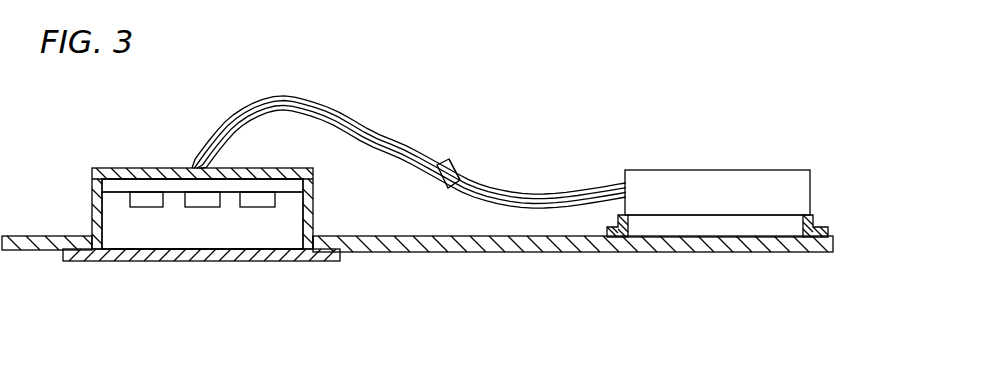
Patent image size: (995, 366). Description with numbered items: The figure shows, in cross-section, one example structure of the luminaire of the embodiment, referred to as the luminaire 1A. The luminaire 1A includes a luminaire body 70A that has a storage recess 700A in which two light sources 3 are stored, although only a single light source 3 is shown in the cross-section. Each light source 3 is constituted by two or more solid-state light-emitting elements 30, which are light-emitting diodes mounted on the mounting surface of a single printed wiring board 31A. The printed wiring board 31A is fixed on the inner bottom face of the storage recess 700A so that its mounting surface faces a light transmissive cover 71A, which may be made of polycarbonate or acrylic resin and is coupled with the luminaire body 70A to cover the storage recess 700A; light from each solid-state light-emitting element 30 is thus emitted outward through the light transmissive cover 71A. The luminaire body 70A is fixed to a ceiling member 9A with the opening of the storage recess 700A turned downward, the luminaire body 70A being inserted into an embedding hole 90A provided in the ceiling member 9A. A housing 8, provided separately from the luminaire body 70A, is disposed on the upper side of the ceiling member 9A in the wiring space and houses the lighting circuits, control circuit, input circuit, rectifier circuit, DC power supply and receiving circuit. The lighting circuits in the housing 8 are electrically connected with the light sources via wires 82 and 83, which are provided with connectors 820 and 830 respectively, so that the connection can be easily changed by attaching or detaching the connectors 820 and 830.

The luminaire 1A is at (203, 232).
The light source 3 is at (197, 270).
The solid-state light-emitting element 30 is at (145, 207).
The printed wiring board 31A is at (169, 183).
The luminaire body 70A is at (84, 190).
The storage recess 700A is at (107, 222).
The light transmissive cover 71A is at (277, 262).
The embedding hole 90A is at (316, 232).
The ceiling member 9A is at (516, 253).
The housing 8 is at (715, 180).
The wire 82 is at (584, 187).
The wire 83 is at (409, 140).
The connector 820 is at (460, 170).
The connector 830 is at (445, 163).